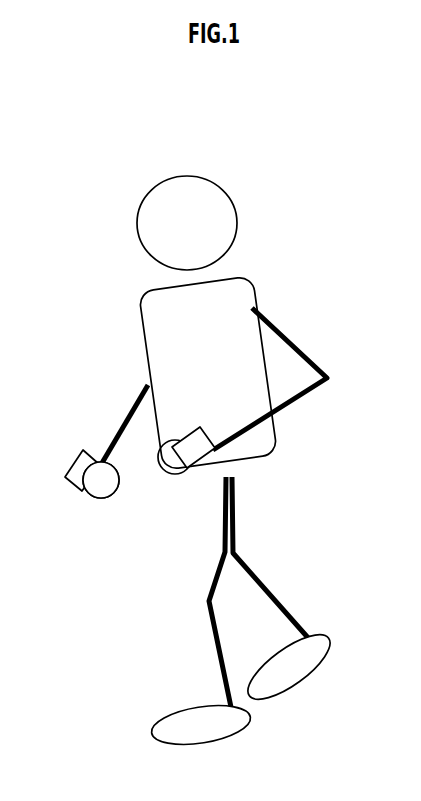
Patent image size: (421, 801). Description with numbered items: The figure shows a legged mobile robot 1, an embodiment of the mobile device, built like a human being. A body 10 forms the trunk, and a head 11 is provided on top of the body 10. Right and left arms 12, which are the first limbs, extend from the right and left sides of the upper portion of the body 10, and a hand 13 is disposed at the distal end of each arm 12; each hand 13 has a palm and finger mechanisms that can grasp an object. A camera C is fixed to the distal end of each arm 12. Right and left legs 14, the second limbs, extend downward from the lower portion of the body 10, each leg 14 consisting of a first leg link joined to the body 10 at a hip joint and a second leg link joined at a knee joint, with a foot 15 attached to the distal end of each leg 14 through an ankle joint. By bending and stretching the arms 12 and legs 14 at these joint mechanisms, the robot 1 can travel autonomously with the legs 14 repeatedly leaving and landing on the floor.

The robot 1 is at (278, 239).
The body 10 is at (138, 303).
The head 11 is at (236, 214).
The arm 12 is at (283, 330).
The hand 13 is at (100, 497).
The leg 14 is at (205, 595).
The foot 15 is at (180, 717).
The camera C is at (72, 465).